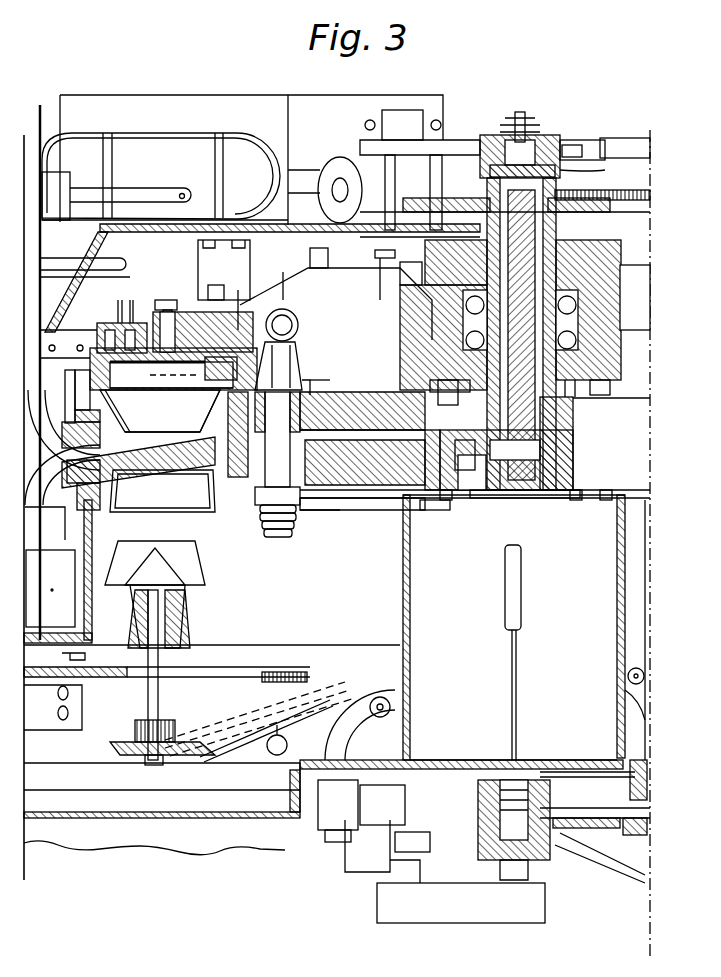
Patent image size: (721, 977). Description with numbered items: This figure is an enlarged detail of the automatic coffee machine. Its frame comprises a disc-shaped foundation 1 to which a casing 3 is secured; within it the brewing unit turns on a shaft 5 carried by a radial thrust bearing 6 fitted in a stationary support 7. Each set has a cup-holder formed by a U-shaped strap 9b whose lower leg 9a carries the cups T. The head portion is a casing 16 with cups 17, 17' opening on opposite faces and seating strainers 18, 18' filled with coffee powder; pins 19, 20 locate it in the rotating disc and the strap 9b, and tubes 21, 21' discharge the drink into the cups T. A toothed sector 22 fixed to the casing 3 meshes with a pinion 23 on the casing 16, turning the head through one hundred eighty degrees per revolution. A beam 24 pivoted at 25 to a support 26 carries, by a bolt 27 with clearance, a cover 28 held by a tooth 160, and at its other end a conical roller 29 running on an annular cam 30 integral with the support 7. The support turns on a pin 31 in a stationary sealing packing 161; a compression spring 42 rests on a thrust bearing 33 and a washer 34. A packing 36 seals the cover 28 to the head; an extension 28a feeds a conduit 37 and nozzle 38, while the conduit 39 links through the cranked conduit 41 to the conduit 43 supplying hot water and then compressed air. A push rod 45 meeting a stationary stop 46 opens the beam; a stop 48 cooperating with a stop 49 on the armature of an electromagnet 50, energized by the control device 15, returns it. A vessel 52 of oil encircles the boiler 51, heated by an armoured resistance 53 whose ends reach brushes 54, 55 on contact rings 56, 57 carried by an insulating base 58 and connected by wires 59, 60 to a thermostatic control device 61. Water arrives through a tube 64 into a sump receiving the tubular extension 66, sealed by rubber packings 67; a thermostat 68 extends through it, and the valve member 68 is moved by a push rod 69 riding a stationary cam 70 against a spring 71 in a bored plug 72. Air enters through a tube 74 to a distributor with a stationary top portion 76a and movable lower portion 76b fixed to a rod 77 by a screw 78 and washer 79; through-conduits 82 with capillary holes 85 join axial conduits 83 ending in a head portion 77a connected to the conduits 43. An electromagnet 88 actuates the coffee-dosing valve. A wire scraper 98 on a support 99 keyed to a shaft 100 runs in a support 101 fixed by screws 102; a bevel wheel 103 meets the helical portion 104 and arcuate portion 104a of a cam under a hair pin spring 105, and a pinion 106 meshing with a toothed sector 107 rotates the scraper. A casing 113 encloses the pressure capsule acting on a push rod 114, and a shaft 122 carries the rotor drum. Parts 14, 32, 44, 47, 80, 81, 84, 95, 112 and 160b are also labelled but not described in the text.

The disc-shaped foundation 1 is at (196, 820).
The casing 3 is at (258, 510).
The shaft 5 is at (570, 192).
The radial thrust bearing 6 is at (575, 395).
The support 7 is at (600, 272).
The lower leg 9a is at (212, 655).
The U-shaped strap 9b is at (95, 525).
The platform 14 is at (462, 200).
The automatic control device 15 is at (36, 108).
The casing 16 is at (258, 516).
The cup 17 is at (138, 474).
The cup 17' is at (126, 411).
The strainer 18 is at (162, 489).
The strainer 18' is at (162, 420).
The pin 19 is at (235, 478).
The pin 20 is at (70, 415).
The tube 21 is at (60, 430).
The tube 21' is at (59, 477).
The toothed sector 22 is at (65, 373).
The toothed pinion 23 is at (65, 505).
The beam 24 is at (340, 275).
The pivot 25 is at (300, 320).
The support 26 is at (298, 340).
The bolt 27 is at (163, 300).
The cover 28 is at (88, 343).
The extension 28a is at (240, 299).
The conical roller 29 is at (422, 268).
The annular cam 30 is at (425, 370).
The pin 31 is at (277, 448).
The nut 32 is at (292, 528).
The thrust bearing 33 is at (330, 495).
The washer 34 is at (278, 525).
The sealing packing 36 is at (150, 378).
The conduit 37 is at (190, 312).
The nozzle 38 is at (155, 400).
The conduit 39 is at (178, 377).
The cranked conduit 41 is at (205, 405).
The helical compression spring 42 is at (328, 375).
The conduit 43 is at (384, 498).
The lever 44 is at (310, 378).
The push rod 45 is at (216, 285).
The stationary stop 46 is at (198, 248).
The plate 47 is at (240, 240).
The stop 48 is at (319, 268).
The stop 49 is at (380, 262).
The electromagnet 50 is at (410, 112).
The boiler 51 is at (412, 652).
The vessel 52 is at (330, 625).
The armoured resistance 53 is at (372, 680).
The brush 54 is at (355, 800).
The brush 55 is at (630, 800).
The contact ring 56 is at (322, 825).
The contact ring 57 is at (390, 800).
The base 58 is at (348, 845).
The wire 59 is at (360, 872).
The wire 60 is at (395, 860).
The thermostatic control device 61 is at (408, 915).
The tube 64 is at (572, 848).
The tubular extension 66 is at (505, 770).
The synthetic rubber packing 67 is at (490, 845).
The thermostat 68 is at (465, 500).
The push rod 69 is at (605, 395).
The stationary cam 70 is at (430, 384).
The spring 71 is at (435, 498).
The bored plug 72 is at (605, 500).
The tube 74 is at (628, 140).
The stationary top portion 76a is at (570, 134).
The movable lower portion 76b is at (596, 175).
The rod 77 is at (540, 450).
The head portion 77a is at (525, 521).
The screw 78 is at (522, 118).
The washer 79 is at (530, 125).
The nut 80 is at (510, 140).
The coupling 81 is at (575, 140).
The through-conduit 82 is at (490, 170).
The axial conduit 83 is at (516, 490).
The hub 84 is at (575, 435).
The capillary hole 85 is at (482, 150).
The electromagnet 88 is at (332, 170).
The box 95 is at (38, 540).
The cup T is at (58, 590).
The scraper 98 is at (195, 578).
The support 99 is at (185, 605).
The shaft 100 is at (160, 682).
The support 101 is at (190, 630).
The screw 102 is at (91, 652).
The bevel wheel 103 is at (155, 765).
The helical cam portion 104 is at (230, 710).
The arcuate cam portion 104a is at (205, 765).
The hair pin spring 105 is at (265, 745).
The toothed pinion 106 is at (170, 720).
The toothed sector 107 is at (283, 672).
The bolt 112 is at (99, 307).
The casing 113 is at (97, 320).
The push rod 114 is at (128, 305).
The shaft 122 is at (165, 185).
The tooth 160 is at (200, 348).
The body 160b is at (358, 392).
The sealing packing 161 is at (362, 457).